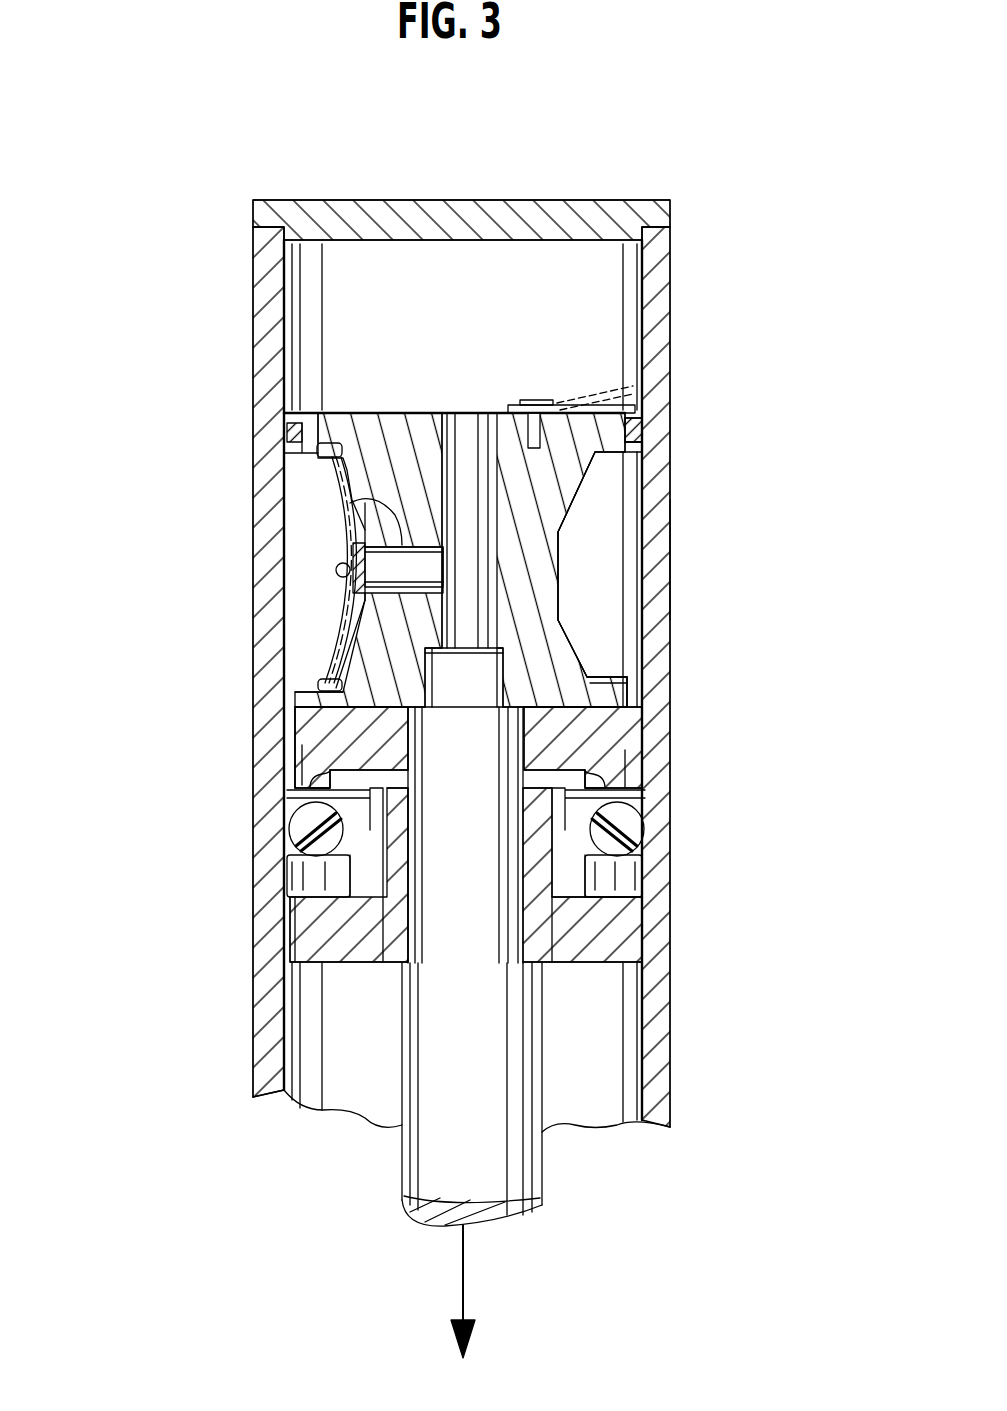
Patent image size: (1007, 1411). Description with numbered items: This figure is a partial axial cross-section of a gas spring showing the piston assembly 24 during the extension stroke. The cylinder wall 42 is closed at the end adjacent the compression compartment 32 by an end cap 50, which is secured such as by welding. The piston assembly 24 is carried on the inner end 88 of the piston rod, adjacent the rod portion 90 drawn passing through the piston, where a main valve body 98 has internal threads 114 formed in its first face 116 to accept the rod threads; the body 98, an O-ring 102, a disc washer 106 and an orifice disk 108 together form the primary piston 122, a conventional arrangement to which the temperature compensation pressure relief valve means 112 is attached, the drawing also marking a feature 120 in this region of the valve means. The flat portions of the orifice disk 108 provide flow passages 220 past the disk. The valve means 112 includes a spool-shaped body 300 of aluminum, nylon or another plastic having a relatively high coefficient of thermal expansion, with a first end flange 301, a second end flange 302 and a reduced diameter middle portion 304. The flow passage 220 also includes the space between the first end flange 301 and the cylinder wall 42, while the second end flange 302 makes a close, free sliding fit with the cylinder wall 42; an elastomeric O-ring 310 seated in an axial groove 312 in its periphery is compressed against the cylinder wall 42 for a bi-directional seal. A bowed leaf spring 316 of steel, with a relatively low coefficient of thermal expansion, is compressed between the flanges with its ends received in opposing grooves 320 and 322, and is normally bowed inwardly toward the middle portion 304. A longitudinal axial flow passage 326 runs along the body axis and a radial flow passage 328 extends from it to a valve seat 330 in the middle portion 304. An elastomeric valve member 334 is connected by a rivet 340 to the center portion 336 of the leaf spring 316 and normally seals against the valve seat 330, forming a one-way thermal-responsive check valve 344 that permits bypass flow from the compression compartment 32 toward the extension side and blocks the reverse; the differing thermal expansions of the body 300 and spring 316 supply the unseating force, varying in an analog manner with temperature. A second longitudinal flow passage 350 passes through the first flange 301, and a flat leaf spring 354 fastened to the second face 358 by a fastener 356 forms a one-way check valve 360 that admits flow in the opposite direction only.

The piston assembly 24 is at (697, 587).
The compression compartment 32 is at (540, 257).
The cylinder wall 42 is at (660, 1022).
The end cap 50 is at (492, 200).
The inner end of the piston rod 88 is at (430, 1018).
The rod guide portion 90 is at (400, 915).
The main valve body 98 is at (615, 925).
The O-ring 102 is at (628, 826).
The disc washer 106 is at (605, 782).
The orifice disk 108 is at (600, 735).
The temperature compensation pressure relief valve means 112 is at (612, 667).
The internal threads 114 is at (512, 683).
The first face 116 is at (605, 695).
The port 120 is at (582, 697).
The primary piston 122 is at (240, 845).
The flow passages 220 is at (290, 732).
The body 300 is at (558, 652).
The first end flange 301 is at (340, 690).
The second end flange 302 is at (300, 450).
The reduced diameter middle portion 304 is at (563, 533).
The O-ring 310 is at (640, 440).
The axial groove 312 is at (635, 428).
The bowed leaf spring 316 is at (320, 466).
The groove 320 is at (330, 715).
The groove 322 is at (292, 425).
The longitudinal axial flow passage 326 is at (467, 457).
The radial flow passage 328 is at (340, 520).
The valve seat 330 is at (318, 645).
The valve member 334 is at (375, 548).
The center portion 336 is at (356, 592).
The rivet 340 is at (336, 572).
The one-way thermal-responsive check valve 344 is at (330, 668).
The second longitudinal flow passage 350 is at (612, 456).
The flat leaf spring 354 is at (555, 405).
The fastener 356 is at (535, 410).
The second face 358 is at (345, 445).
The one-way check valve 360 is at (648, 390).